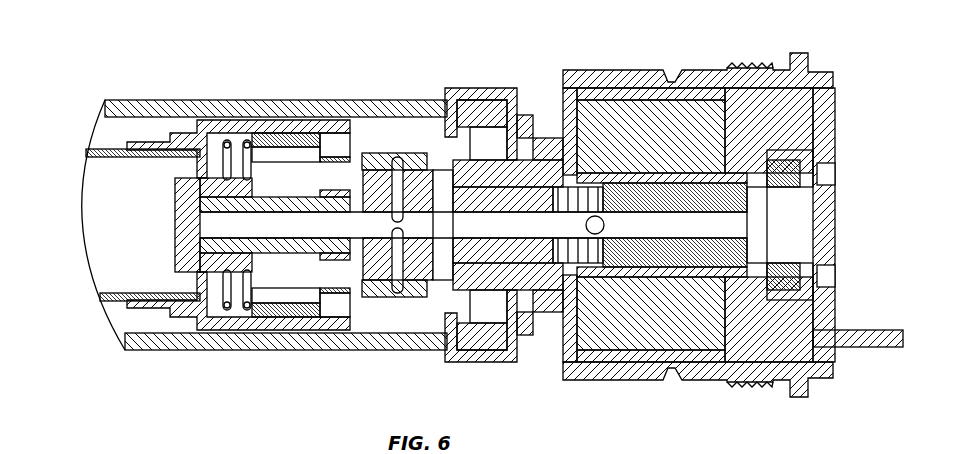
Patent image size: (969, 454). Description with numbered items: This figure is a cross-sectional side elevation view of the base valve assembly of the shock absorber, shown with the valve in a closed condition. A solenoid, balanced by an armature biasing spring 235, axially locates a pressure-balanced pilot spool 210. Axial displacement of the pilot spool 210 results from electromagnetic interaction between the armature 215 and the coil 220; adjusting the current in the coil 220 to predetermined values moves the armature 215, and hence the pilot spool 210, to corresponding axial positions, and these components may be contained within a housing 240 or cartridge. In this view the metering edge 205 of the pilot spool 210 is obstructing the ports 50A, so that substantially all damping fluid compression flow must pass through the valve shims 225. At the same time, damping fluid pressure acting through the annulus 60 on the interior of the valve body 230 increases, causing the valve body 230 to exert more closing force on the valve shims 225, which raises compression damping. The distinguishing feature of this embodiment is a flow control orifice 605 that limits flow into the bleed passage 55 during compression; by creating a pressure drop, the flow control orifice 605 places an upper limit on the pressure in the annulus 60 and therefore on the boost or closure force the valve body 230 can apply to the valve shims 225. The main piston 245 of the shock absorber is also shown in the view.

The bleed passage 55 is at (200, 235).
The flow control orifice 605 is at (168, 227).
The valve shims 225 is at (310, 133).
The main piston 245 is at (333, 135).
The metering edge 205 is at (393, 252).
The valve body 230 is at (376, 142).
The annulus 60 is at (398, 162).
The ports 50A is at (444, 186).
The housing 240 is at (478, 276).
The armature biasing spring 235 is at (593, 165).
The pilot spool 210 is at (598, 282).
The coil 220 is at (638, 92).
The armature 215 is at (743, 152).